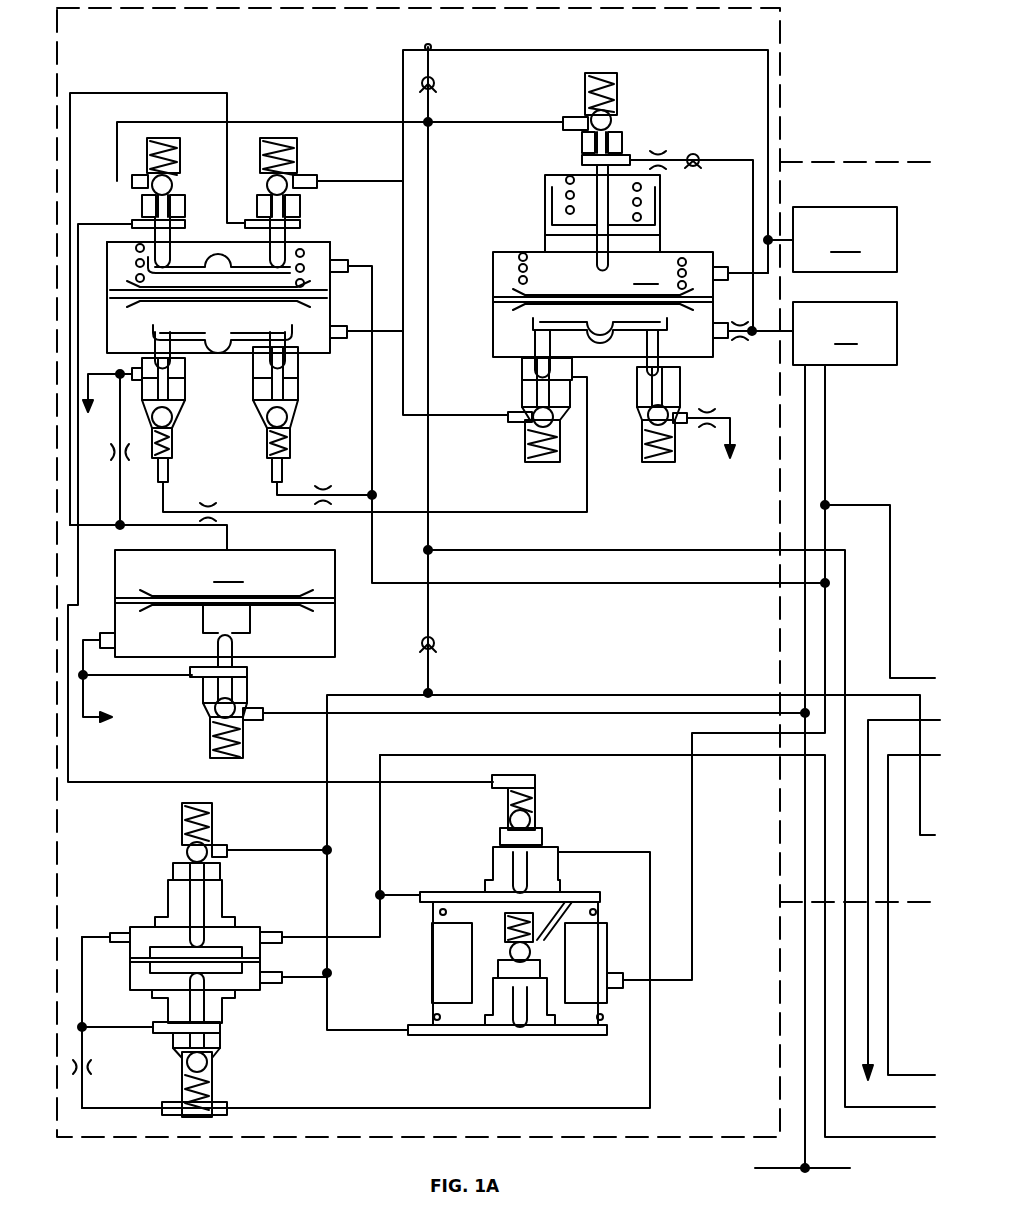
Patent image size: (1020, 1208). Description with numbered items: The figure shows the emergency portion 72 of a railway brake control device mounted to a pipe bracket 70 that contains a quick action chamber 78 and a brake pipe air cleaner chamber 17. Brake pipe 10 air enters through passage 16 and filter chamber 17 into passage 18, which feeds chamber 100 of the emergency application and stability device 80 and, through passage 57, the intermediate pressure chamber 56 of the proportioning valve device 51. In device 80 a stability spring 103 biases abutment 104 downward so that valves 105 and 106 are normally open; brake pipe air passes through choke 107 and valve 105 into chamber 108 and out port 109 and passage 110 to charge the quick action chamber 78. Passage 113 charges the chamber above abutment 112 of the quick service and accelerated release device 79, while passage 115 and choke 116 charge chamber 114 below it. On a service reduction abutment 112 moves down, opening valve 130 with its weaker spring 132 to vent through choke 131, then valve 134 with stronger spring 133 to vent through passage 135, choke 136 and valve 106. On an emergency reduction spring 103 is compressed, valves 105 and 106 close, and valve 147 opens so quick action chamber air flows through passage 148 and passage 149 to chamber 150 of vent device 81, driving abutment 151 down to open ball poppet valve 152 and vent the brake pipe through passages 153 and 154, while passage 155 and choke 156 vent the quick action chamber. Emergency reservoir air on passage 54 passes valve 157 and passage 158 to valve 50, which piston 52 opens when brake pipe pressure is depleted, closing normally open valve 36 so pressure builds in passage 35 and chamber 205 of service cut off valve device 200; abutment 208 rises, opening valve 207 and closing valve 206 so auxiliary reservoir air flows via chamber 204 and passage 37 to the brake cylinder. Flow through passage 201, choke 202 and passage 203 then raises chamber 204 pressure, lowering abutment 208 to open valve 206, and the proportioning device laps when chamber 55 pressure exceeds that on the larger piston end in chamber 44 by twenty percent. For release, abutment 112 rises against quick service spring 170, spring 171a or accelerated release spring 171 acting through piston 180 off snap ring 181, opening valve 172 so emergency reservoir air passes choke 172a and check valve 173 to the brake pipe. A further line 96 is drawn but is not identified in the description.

The brake control pipe 10 is at (838, 1168).
The passage 16 is at (803, 1152).
The air cleaner chamber 17 is at (845, 333).
The passage 18 is at (375, 440).
The passage 35 is at (523, 695).
The normally open valve 36 is at (505, 956).
The passage 37 is at (380, 843).
The chamber 44 is at (443, 1036).
The valve 50 is at (533, 822).
The proportioning valve device 51 is at (477, 886).
The stepped piston 52 is at (462, 942).
The passage 54 is at (638, 550).
The chamber 55 is at (588, 892).
The intermediate pressure chamber 56 is at (583, 961).
The passage 57 is at (696, 878).
The pipe bracket 70 is at (857, 163).
The emergency portion 72 is at (244, 10).
The quick action chamber 78 is at (832, 239).
The combined quick service and accelerated release valve device 79 is at (619, 228).
The emergency application and stability device 80 is at (320, 242).
The emergency vent control device 81 is at (217, 589).
The pipe 96 is at (903, 720).
The chamber 100 is at (212, 242).
The stability spring 103 is at (333, 263).
The abutment 104 is at (351, 330).
The quick action charging and stability valve 105 is at (290, 417).
The valve 106 is at (172, 417).
The choke 107 is at (325, 494).
The chamber 108 is at (224, 356).
The outlet port 109 is at (345, 318).
The passage 110 is at (400, 127).
The abutment 112 is at (672, 318).
The passage 113 is at (730, 270).
The chamber 114 is at (612, 352).
The passage 115 is at (752, 337).
The choke 116 is at (737, 326).
The valve 130 is at (680, 413).
The choke 131 is at (711, 430).
The biasing spring 132 is at (645, 445).
The biasing spring 133 is at (535, 445).
The valve 134 is at (533, 424).
The passage 135 is at (472, 512).
The choke 136 is at (212, 510).
The valve 147 is at (288, 180).
The passage 148 is at (340, 188).
The passage 149 is at (130, 93).
The chamber 150 is at (217, 608).
The abutment 151 is at (284, 595).
The valve 152 is at (214, 716).
The passage 153 is at (273, 713).
The passage 154 is at (140, 677).
The passage 155 is at (118, 500).
The choke 156 is at (111, 455).
The valve 157 is at (172, 185).
The passage 158 is at (104, 222).
The quick service spring 170 is at (520, 270).
The accelerated release spring 171 is at (579, 174).
The spring 171a is at (585, 95).
The valve 172 is at (612, 121).
The choke 172a is at (660, 150).
The check valve 173 is at (697, 167).
The piston 180 is at (552, 220).
The snap ring 181 is at (550, 245).
The service cut off valve device 200 is at (361, 960).
The passage 201 is at (343, 1108).
The choke 202 is at (91, 1068).
The passage 203 is at (130, 950).
The chamber 204 is at (143, 926).
The chamber 205 is at (249, 983).
The valve 206 is at (212, 1060).
The valve 207 is at (186, 852).
The abutment 208 is at (160, 970).